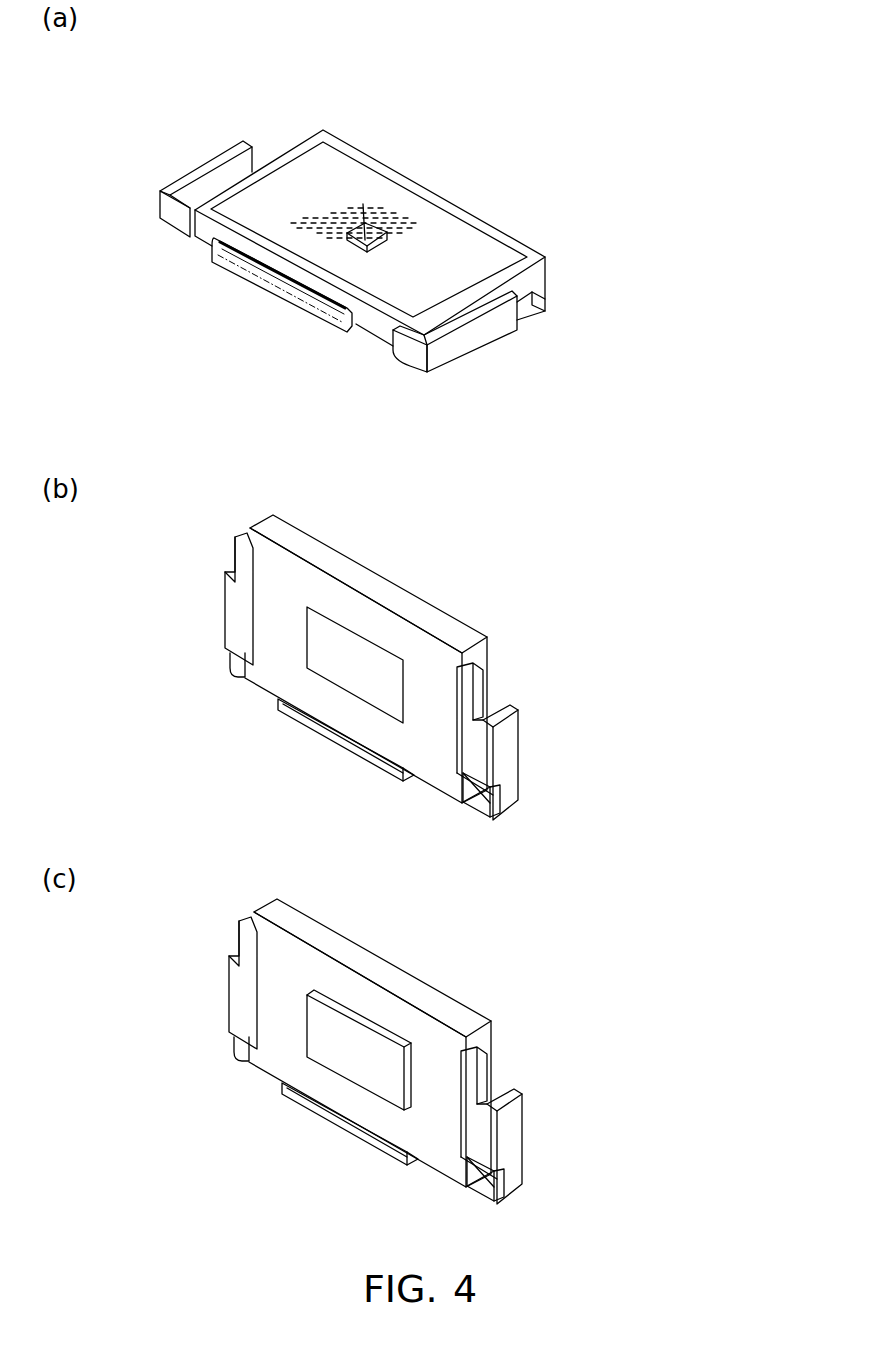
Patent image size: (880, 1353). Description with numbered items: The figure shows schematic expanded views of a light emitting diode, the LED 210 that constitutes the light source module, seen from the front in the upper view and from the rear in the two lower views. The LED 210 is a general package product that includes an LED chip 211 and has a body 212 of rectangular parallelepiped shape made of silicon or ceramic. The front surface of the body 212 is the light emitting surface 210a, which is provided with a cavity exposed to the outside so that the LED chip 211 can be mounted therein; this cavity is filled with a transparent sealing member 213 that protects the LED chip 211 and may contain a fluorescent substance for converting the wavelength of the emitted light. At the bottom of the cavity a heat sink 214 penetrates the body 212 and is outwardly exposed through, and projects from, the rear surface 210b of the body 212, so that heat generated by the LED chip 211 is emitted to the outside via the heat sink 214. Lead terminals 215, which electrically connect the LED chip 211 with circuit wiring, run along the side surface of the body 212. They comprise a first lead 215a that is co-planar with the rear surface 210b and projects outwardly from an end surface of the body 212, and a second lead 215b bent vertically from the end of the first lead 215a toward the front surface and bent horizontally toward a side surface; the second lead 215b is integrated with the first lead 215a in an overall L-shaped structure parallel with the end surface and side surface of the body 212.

The LED 210 is at (205, 72).
The light emitting surface 210a is at (347, 170).
The rear surface 210b is at (266, 627).
The LED chip 211 is at (413, 163).
The body 212 is at (530, 245).
The sealing member 213 is at (482, 247).
The heat sink 214 is at (267, 287).
The lead terminals 215 is at (629, 393).
The first lead 215a is at (533, 305).
The second lead 215b is at (477, 337).